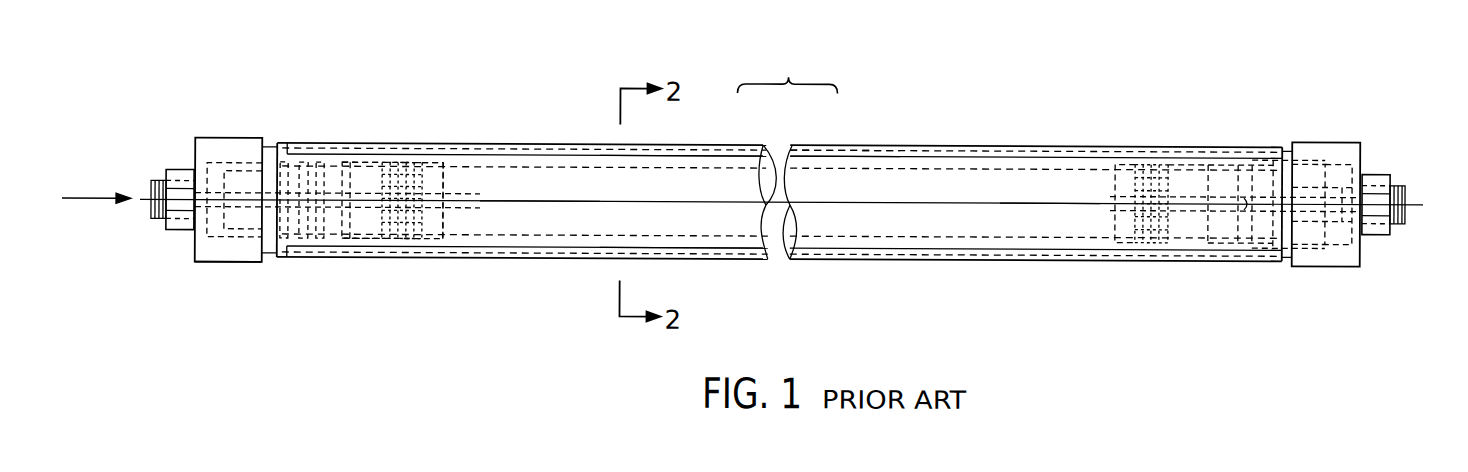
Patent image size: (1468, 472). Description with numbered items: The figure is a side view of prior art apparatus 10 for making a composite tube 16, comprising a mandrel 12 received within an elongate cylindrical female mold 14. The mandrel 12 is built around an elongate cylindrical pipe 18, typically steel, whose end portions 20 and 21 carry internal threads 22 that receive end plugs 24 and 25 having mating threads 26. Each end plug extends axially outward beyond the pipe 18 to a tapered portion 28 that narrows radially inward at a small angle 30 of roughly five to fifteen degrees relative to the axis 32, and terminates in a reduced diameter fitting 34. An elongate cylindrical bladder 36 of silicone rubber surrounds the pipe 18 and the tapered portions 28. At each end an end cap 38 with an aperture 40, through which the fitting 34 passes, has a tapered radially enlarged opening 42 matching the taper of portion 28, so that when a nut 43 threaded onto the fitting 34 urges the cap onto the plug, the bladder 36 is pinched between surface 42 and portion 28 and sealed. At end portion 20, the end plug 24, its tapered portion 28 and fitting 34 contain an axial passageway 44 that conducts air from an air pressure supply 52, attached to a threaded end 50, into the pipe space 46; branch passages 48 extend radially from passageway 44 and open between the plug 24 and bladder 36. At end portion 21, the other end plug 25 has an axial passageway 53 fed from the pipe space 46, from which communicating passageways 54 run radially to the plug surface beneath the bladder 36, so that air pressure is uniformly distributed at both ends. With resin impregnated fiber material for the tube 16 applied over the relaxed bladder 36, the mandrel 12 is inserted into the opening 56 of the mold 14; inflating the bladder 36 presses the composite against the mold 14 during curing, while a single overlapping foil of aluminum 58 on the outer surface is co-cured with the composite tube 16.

The apparatus 10 is at (1098, 118).
The mandrel 12 is at (1040, 243).
The elongate cylindrical mold 14 is at (973, 149).
The composite tube 16 is at (917, 158).
The elongate cylindrical pipe 18 is at (818, 160).
The end portion 20 is at (370, 167).
The end portion 21 is at (1138, 164).
The internal threads 22 is at (442, 167).
The end plug 24 is at (365, 228).
The end plug 25 is at (1190, 228).
The threads 26 is at (420, 228).
The tapered portion 28 is at (247, 172).
The angle 30 is at (242, 265).
The axis 32 is at (519, 203).
The reduced diameter fitting 34 is at (197, 171).
The bladder 36 is at (740, 250).
The end cap 38 is at (214, 140).
The aperture 40 is at (208, 221).
The tapered radially enlarged opening 42 is at (238, 162).
The nut 43 is at (177, 171).
The passageway 44 is at (347, 167).
The pipe space 46 is at (1047, 181).
The branch passages 48 is at (304, 166).
The threaded end 50 is at (156, 219).
The air pressure supply 52 is at (87, 198).
The passageway 53 is at (1224, 198).
The communicating passageways 54 is at (1264, 247).
The opening 56 is at (738, 158).
The foil of aluminum 58 is at (862, 152).